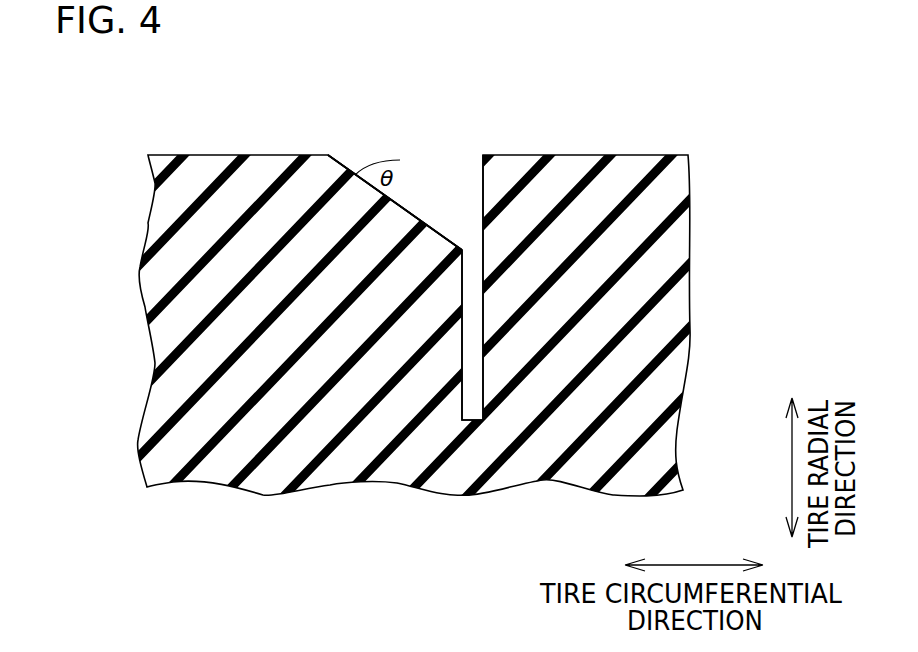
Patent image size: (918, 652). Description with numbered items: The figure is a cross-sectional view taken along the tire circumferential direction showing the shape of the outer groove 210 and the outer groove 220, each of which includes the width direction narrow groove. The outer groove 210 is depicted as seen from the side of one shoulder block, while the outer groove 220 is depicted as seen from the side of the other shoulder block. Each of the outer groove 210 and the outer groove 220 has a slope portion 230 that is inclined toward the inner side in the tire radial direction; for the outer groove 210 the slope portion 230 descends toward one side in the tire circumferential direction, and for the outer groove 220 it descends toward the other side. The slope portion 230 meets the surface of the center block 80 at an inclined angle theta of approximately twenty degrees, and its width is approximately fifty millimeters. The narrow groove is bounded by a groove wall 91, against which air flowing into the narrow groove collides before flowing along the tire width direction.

The center block 80 is at (607, 157).
The groove wall 91 is at (475, 187).
The outer groove 210 is at (395, 136).
The outer groove 220 is at (382, 147).
The slope portion 230 is at (400, 205).